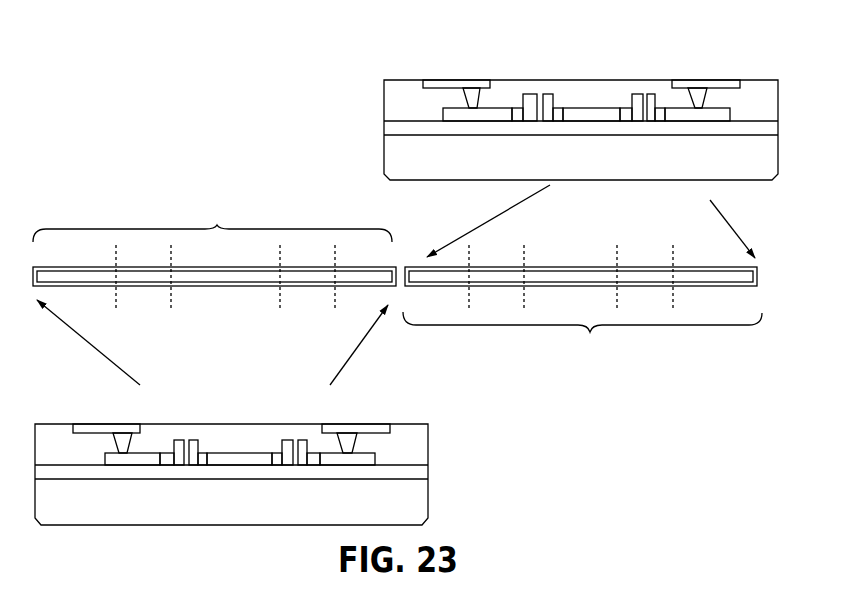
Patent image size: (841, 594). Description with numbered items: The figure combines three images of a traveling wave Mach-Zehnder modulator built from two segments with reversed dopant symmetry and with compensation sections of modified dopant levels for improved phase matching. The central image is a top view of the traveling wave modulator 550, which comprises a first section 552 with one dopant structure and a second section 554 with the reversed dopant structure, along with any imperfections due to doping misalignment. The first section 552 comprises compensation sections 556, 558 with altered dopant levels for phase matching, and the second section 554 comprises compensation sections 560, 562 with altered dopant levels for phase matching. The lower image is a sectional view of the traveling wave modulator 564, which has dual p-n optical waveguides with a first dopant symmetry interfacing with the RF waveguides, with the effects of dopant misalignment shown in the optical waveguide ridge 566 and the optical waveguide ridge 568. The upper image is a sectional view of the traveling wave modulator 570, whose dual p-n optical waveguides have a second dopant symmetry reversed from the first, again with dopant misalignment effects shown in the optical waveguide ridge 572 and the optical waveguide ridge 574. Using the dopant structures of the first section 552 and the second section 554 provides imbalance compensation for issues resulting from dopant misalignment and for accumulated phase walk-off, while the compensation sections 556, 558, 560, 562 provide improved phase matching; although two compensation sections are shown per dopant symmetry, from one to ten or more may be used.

The traveling wave modulator 550 is at (402, 243).
The first section 552 is at (212, 222).
The second section 554 is at (582, 333).
The compensation section 556 is at (163, 290).
The compensation section 558 is at (327, 290).
The compensation section 560 is at (517, 287).
The compensation section 562 is at (665, 287).
The traveling wave modulator 564 is at (255, 456).
The optical waveguide ridge 566 is at (187, 440).
The optical waveguide ridge 568 is at (296, 433).
The traveling wave modulator 570 is at (560, 111).
The optical waveguide ridge 572 is at (541, 90).
The optical waveguide ridge 574 is at (643, 90).